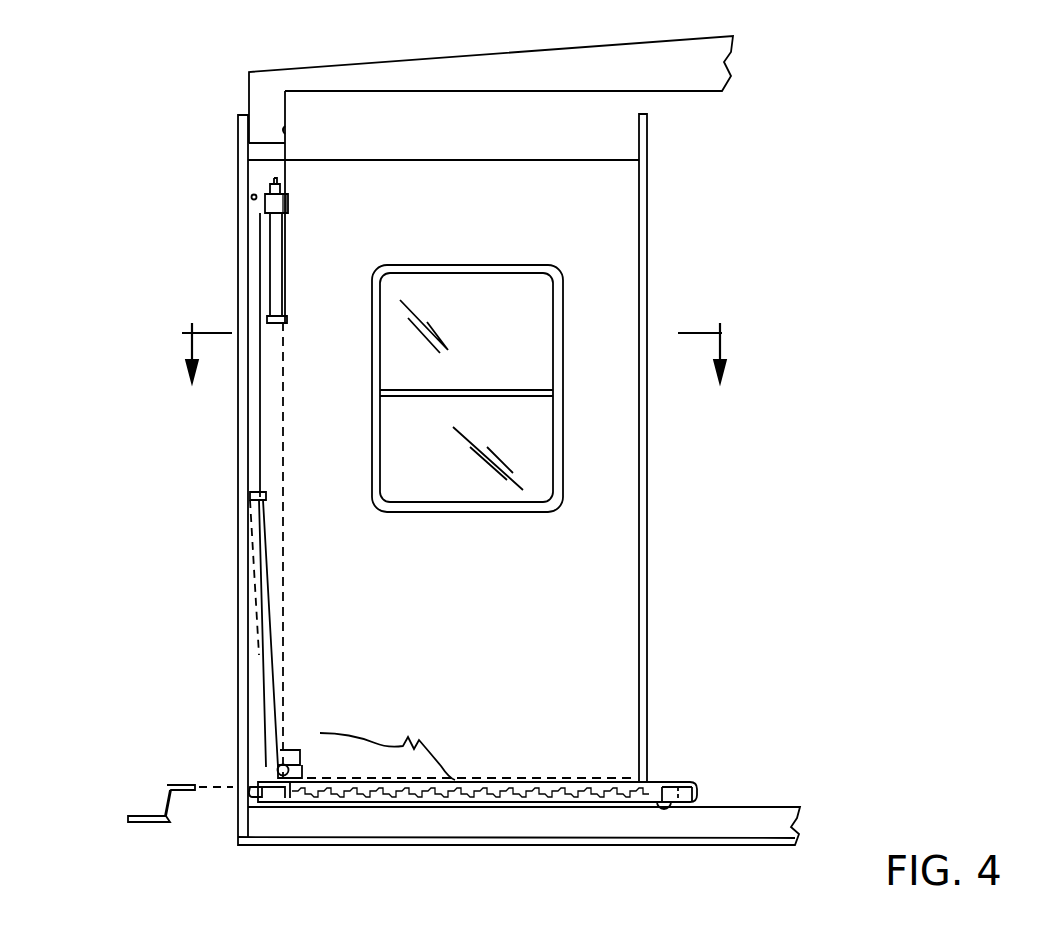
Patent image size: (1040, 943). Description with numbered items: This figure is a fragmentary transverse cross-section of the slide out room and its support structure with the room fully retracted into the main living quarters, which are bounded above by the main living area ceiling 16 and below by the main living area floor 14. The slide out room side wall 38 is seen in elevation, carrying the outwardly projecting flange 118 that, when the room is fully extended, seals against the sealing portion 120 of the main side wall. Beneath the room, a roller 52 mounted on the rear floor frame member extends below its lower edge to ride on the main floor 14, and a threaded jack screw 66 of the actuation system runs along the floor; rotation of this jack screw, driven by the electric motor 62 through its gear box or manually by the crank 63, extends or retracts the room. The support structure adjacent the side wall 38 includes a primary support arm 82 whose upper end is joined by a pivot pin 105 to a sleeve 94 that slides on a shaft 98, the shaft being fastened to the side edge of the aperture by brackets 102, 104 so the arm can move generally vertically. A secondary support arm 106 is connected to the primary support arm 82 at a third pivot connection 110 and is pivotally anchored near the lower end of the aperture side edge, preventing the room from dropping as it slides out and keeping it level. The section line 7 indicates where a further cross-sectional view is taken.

The main living area ceiling 16 is at (585, 81).
The sealing portion 120 is at (290, 131).
The flange 118 is at (648, 127).
The bracket 104 is at (282, 190).
The sleeve 94 is at (288, 207).
The pivot pin 105 is at (250, 197).
The shaft 98 is at (279, 270).
The bracket 102 is at (287, 319).
The primary support arm 82 is at (256, 412).
The third pivot connection 110 is at (262, 498).
The secondary support arm 106 is at (279, 682).
The electric motor 62 is at (298, 759).
The crank 63 is at (183, 783).
The threaded jack screw 66 is at (353, 800).
The main living area floor 14 is at (515, 810).
The roller 52 is at (665, 810).
The slide out room side wall 38 is at (494, 615).
The section line 7- 7 is at (454, 366).